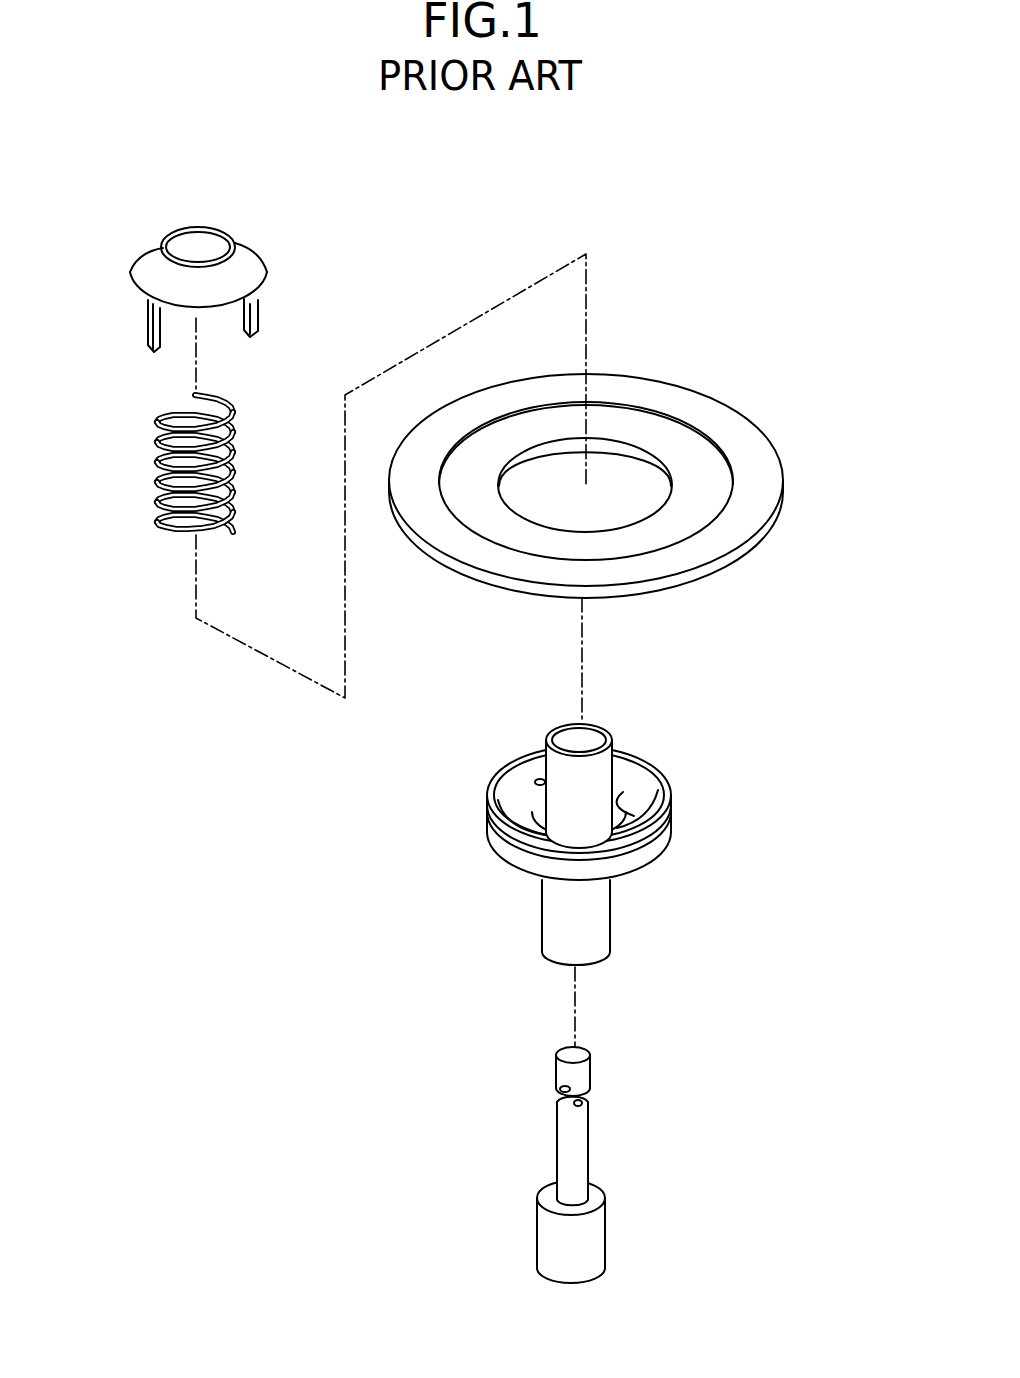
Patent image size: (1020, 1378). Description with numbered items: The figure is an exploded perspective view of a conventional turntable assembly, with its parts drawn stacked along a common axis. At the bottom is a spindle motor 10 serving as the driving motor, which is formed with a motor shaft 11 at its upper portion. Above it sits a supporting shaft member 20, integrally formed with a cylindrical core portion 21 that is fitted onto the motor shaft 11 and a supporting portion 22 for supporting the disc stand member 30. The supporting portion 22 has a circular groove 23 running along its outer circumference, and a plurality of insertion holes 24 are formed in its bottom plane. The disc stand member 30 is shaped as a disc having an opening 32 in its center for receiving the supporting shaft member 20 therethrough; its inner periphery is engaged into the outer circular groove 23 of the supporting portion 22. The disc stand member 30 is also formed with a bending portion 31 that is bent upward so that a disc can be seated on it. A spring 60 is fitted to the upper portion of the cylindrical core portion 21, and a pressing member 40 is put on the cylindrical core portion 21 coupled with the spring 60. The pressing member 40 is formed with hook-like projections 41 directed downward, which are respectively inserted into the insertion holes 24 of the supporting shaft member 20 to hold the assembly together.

The spindle motor 10 is at (586, 1165).
The motor shaft 11 is at (563, 1145).
The supporting shaft member 20 is at (584, 809).
The cylindrical core portion 21 is at (579, 738).
The supporting portion 22 is at (638, 810).
The circular groove 23 is at (487, 827).
The insertion holes 24 is at (540, 777).
The disc stand member 30 is at (595, 434).
The bending portion 31 is at (505, 413).
The opening 32 is at (620, 514).
The pressing member 40 is at (213, 268).
The hook-like projections 41 is at (150, 332).
The spring 60 is at (170, 536).